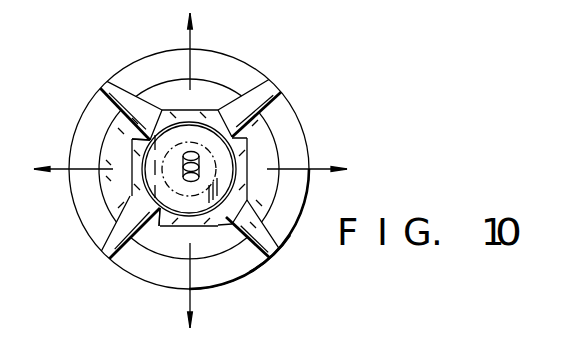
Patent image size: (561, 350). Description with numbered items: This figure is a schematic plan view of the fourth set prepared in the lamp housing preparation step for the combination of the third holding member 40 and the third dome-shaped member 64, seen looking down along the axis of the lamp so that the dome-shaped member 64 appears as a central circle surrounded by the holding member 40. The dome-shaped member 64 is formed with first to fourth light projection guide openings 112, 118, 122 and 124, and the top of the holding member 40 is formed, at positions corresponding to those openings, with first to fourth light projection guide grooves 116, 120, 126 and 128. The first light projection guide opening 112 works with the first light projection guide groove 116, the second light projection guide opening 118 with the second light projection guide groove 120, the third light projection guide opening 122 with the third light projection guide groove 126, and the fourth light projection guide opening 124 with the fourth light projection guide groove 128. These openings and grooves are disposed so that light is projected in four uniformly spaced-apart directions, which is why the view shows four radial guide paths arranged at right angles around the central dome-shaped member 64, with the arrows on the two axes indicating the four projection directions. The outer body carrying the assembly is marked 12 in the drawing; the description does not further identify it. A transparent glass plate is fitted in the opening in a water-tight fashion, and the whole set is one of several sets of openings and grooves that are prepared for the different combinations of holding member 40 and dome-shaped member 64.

The holding member 40 is at (156, 50).
The fourth light projection guide groove 128 is at (133, 76).
The second light projection guide groove 120 is at (93, 119).
The second light projection guide opening 118 is at (118, 185).
The third light projection guide opening 122 is at (172, 241).
The third light projection guide groove 126 is at (232, 280).
The body (nozzle 20) 12 is at (291, 232).
The first light projection guide groove 116 is at (307, 147).
The first light projection guide opening 112 is at (262, 139).
The fourth light projection guide opening 124 is at (220, 100).
The dome-shaped member 64 is at (202, 118).